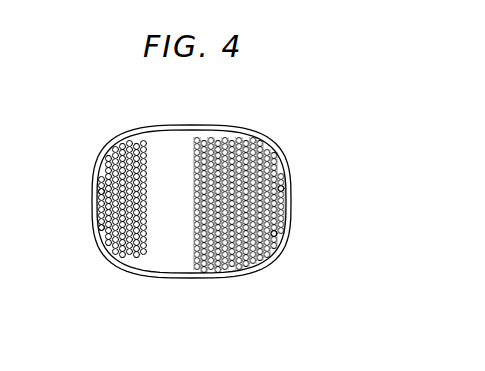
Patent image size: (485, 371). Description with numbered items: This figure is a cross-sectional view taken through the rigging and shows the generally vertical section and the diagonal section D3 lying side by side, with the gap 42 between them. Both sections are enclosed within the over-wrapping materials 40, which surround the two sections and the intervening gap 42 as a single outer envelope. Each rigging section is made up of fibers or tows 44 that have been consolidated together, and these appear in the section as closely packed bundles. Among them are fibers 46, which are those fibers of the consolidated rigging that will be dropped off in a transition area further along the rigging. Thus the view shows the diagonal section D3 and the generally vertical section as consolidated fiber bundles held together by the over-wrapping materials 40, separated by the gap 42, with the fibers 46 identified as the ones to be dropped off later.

The over-wrapping materials 40 is at (196, 128).
The gap 42 is at (164, 152).
The fibers or tows 44 is at (138, 167).
The fibers 46 is at (99, 190).
The diagonal section D3 is at (113, 291).